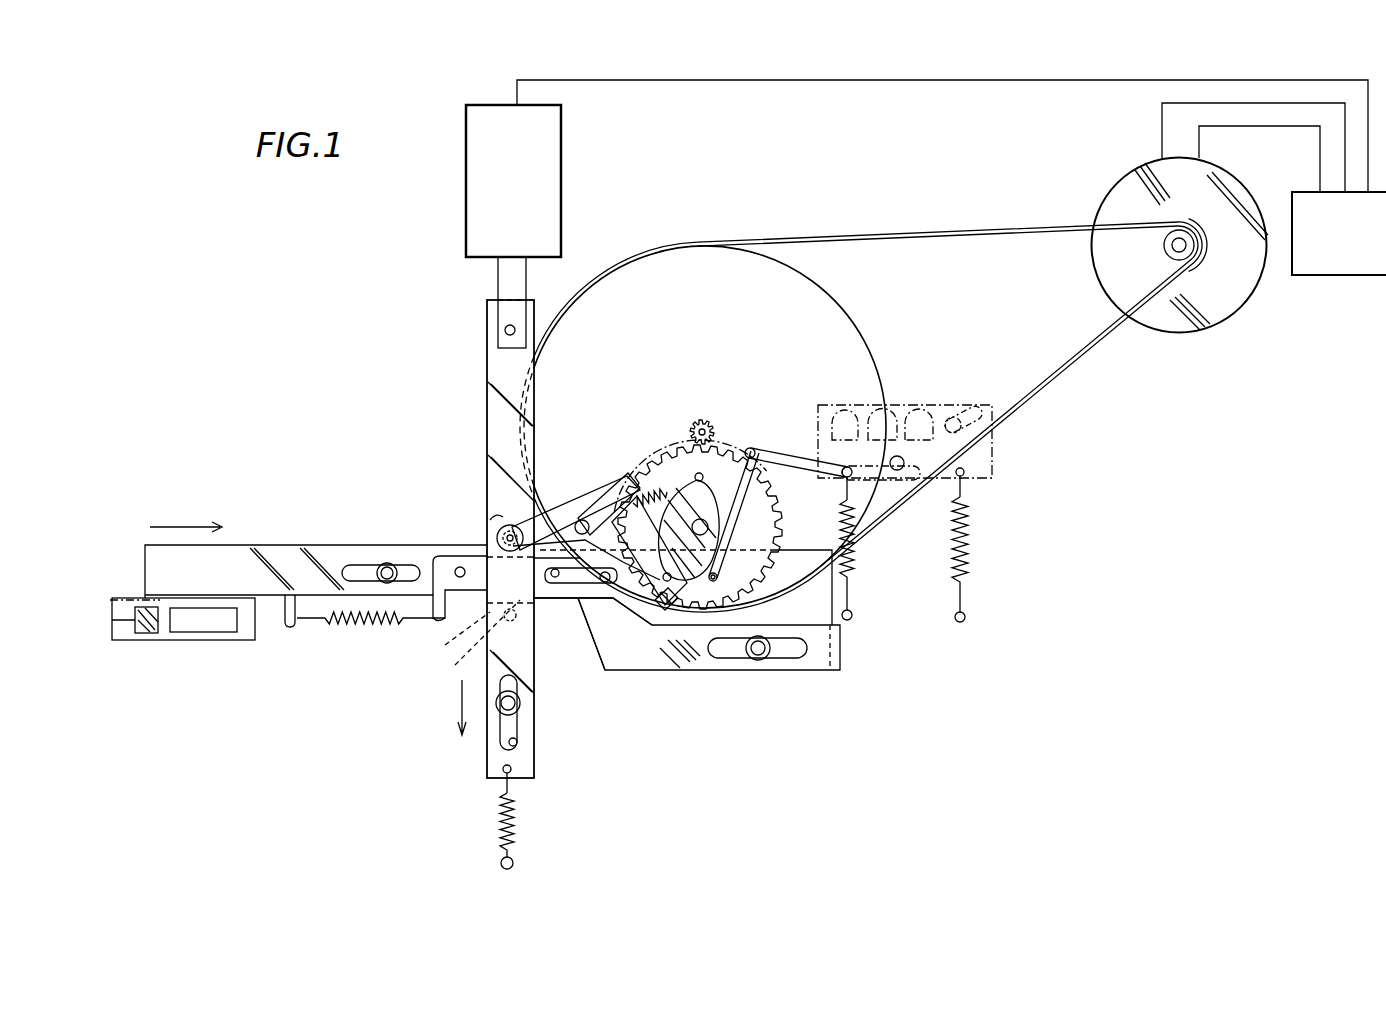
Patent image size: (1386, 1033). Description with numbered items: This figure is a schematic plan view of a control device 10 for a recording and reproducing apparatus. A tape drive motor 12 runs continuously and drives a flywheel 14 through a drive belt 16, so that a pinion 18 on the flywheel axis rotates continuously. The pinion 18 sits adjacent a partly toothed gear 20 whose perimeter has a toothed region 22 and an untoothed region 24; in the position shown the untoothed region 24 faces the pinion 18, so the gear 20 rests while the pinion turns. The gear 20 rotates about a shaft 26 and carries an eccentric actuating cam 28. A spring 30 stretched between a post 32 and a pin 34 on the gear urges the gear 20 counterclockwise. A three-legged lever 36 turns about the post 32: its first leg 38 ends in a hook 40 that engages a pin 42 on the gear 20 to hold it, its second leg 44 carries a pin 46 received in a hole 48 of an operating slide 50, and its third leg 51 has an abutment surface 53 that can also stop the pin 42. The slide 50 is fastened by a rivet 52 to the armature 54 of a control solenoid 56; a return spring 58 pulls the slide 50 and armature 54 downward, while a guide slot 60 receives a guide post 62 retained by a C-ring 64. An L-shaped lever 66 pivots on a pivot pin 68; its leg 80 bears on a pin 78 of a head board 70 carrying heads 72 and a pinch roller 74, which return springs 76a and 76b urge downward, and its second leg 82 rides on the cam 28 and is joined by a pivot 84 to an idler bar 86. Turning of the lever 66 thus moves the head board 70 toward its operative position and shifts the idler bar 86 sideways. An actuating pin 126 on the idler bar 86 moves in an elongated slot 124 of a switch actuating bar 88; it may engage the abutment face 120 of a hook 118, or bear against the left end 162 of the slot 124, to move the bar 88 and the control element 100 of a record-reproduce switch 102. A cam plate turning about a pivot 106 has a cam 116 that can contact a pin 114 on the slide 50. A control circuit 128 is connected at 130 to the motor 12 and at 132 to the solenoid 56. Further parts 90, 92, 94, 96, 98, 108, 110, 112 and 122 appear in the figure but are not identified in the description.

The control device 10 is at (842, 144).
The tape drive motor 12 is at (1120, 176).
The flywheel 14 is at (838, 305).
The drive belt 16 is at (990, 227).
The pinion 18 is at (702, 421).
The partly toothed gear 20 is at (770, 533).
The toothed region 22 is at (770, 572).
The untoothed region 24 is at (672, 447).
The shaft 26 is at (700, 519).
The eccentric actuating cam 28 is at (675, 440).
The spring 30 is at (625, 495).
The post 32 is at (555, 520).
The pin 34 is at (703, 472).
The three-legged lever 36 is at (503, 517).
The first leg 38 is at (662, 590).
The hook 40 is at (654, 629).
The pin 42 is at (668, 605).
The second leg 44 is at (500, 528).
The pin 46 is at (497, 534).
The hole 48 is at (504, 536).
The operating slide 50 is at (487, 366).
The third leg 51 is at (583, 520).
The rivet 52 is at (505, 330).
The abutment surface 53 is at (620, 480).
The armature 54 is at (498, 275).
The control solenoid 56 is at (563, 196).
The return spring 58 is at (500, 815).
The guide slot 60 is at (520, 755).
The guide post 62 is at (520, 703).
The C-ring 64 is at (518, 742).
The L-shaped lever 66 is at (800, 455).
The pivot pin 68 is at (752, 448).
The head board 70 is at (993, 445).
The record or reproduce heads 72 is at (925, 408).
The pinch roller 74 is at (960, 410).
The return spring 76a is at (855, 535).
The return spring 76b is at (975, 512).
The pin 78 is at (897, 456).
The leg 80 is at (895, 487).
The second leg 82 is at (765, 510).
The pivot 84 is at (713, 585).
The idler bar 86 is at (820, 593).
The switch actuating bar 88 is at (262, 545).
The slot 90 is at (345, 563).
The slot 92 is at (790, 652).
The guide pin 94 is at (385, 562).
The guide pin 96 is at (755, 658).
The switch contact 98 is at (147, 637).
The control element 100 is at (200, 640).
The record-reproduce switch 102 is at (218, 645).
The pivot 106 is at (455, 562).
The spring 108 is at (350, 626).
The hook 110 is at (435, 619).
The hook 112 is at (292, 628).
The pin 114 is at (460, 640).
The cam 116 is at (445, 636).
The hook 118 is at (592, 636).
The abutment face 120 is at (560, 590).
The link 122 is at (563, 560).
The elongated slot 124 is at (617, 672).
The actuating pin 126 is at (540, 590).
The control circuit 128 is at (1363, 277).
The connection 130 is at (1266, 126).
The connection 132 is at (1005, 80).
The left end 162 is at (545, 573).